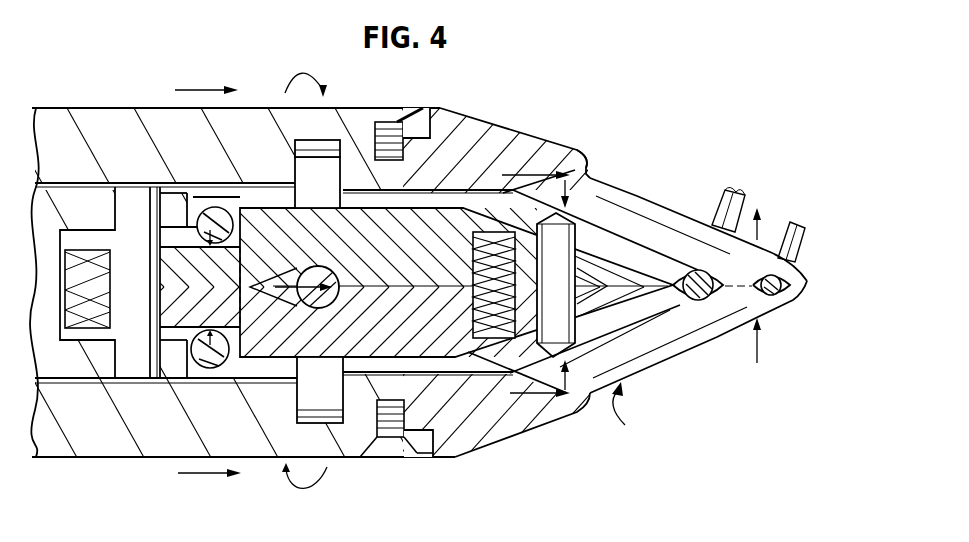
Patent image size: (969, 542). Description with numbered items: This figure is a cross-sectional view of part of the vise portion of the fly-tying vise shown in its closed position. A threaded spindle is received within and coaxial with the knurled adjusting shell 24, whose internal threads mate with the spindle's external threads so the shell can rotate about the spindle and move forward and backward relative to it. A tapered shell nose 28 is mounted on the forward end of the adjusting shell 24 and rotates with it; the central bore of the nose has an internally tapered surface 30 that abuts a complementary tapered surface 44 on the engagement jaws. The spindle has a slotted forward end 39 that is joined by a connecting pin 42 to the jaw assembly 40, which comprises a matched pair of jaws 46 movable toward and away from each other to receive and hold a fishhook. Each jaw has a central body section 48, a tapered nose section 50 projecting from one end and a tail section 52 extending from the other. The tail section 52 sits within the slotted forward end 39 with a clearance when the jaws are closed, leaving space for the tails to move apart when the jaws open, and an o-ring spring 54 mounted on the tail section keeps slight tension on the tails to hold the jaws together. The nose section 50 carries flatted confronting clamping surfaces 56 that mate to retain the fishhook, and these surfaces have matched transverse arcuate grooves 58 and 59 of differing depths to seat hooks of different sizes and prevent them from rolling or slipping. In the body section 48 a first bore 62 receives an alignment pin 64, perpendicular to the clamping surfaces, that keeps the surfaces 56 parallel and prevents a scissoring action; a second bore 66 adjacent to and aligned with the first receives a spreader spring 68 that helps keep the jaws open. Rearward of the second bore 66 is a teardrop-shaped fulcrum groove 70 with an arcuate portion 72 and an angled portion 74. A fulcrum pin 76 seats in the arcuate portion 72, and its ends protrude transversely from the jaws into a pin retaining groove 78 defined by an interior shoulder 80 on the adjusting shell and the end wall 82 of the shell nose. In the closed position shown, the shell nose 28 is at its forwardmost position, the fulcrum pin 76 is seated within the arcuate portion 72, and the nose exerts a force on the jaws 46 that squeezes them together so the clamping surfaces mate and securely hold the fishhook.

The adjusting shell 24 is at (100, 124).
The shell nose 28 is at (462, 130).
The internally tapered surface 30 is at (578, 150).
The slotted forward end 39 is at (152, 190).
The jaw assembly 40 is at (632, 412).
The connecting pin 42 is at (130, 365).
The complementary tapered surface 44 is at (593, 178).
The jaws 46 is at (650, 213).
The central body section 48 is at (594, 380).
The tapered nose section 50 is at (722, 347).
The tail section 52 is at (87, 377).
The o-ring spring 54 is at (215, 205).
The clamping surfaces 56 is at (790, 280).
The transverse arcuate groove 58 is at (784, 292).
The transverse arcuate groove 59 is at (678, 297).
The first bore 62 is at (560, 370).
The alignment pin 64 is at (530, 378).
The second bore 66 is at (487, 380).
The spreader spring 68 is at (505, 235).
The fulcrum groove 70 is at (320, 310).
The arcuate portion 72 is at (412, 440).
The angled portion 74 is at (292, 365).
The fulcrum pin 76 is at (395, 468).
The pin retaining groove 78 is at (335, 170).
The interior shoulder 80 is at (300, 103).
The end wall 82 is at (390, 122).